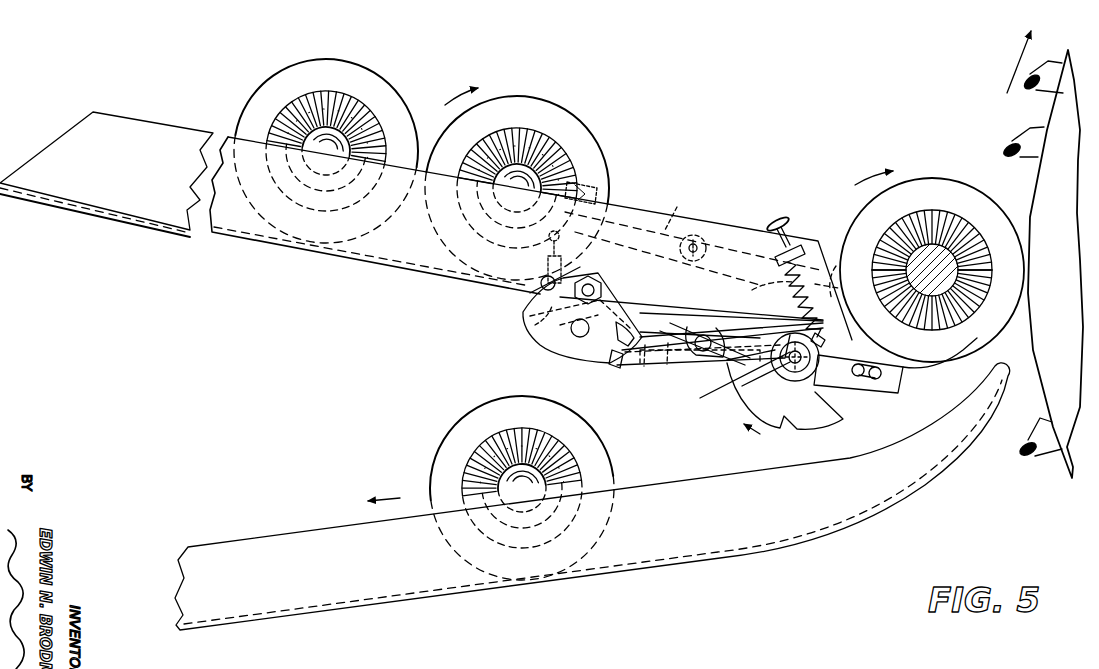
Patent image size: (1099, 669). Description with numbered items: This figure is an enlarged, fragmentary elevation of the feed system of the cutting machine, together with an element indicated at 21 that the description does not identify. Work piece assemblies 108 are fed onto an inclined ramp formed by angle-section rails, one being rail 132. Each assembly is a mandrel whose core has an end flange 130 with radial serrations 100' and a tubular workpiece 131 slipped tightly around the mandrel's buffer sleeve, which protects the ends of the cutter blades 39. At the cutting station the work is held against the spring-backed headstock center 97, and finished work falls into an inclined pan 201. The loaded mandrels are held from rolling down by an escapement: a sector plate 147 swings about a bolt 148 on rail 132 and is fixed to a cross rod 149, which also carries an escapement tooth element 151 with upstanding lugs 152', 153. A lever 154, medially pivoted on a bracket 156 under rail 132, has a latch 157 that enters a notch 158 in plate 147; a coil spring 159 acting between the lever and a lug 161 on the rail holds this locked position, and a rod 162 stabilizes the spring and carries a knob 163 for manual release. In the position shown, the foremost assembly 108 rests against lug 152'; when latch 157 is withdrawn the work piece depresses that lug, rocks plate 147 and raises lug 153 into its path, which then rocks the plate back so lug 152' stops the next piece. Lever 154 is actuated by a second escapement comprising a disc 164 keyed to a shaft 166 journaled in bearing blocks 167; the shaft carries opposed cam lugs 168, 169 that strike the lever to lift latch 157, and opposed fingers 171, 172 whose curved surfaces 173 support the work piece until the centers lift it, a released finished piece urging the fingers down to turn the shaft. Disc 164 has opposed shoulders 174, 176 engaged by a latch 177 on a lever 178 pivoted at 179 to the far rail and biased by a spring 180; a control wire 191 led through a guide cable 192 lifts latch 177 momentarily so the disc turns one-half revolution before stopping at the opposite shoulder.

The conveyor belt 21 is at (1003, 74).
The cutter blade 39 is at (1022, 132).
The headstock center 97 is at (958, 240).
The radial serrations 100' is at (644, 279).
The work piece assembly 108 is at (342, 58).
The end flange 130 is at (374, 110).
The workpiece 131 is at (266, 90).
The rail 132 is at (172, 127).
The sector plate 147 is at (545, 342).
The bolt 148 is at (605, 286).
The cross rod 149 is at (575, 332).
The escapement tooth element 151 is at (535, 325).
The upstanding lug 152' is at (539, 289).
The upstanding lug 153 is at (665, 316).
The lever 154 is at (702, 379).
The bracket 156 is at (752, 314).
The latch 157 is at (632, 337).
The notch 158 is at (617, 360).
The coil spring 159 is at (790, 277).
The lug 161 is at (804, 254).
The rod 162 is at (794, 246).
The knob 163 is at (776, 221).
The disc 164 is at (752, 401).
The shaft 166 is at (742, 386).
The bearing block 167 is at (797, 382).
The cam lug 168 is at (760, 362).
The cam lug 169 is at (790, 323).
The finger 171 is at (922, 386).
The finger 172 is at (703, 367).
The curved surface 173 is at (944, 360).
The shoulder 174 is at (775, 428).
The shoulder 176 is at (835, 288).
The latch 177 is at (836, 266).
The lever 178 is at (690, 236).
The pivot 179 is at (702, 233).
The spring 180 is at (622, 198).
The control wire 191 is at (550, 240).
The guide cable 192 is at (548, 265).
The inclined pan 201 is at (706, 486).